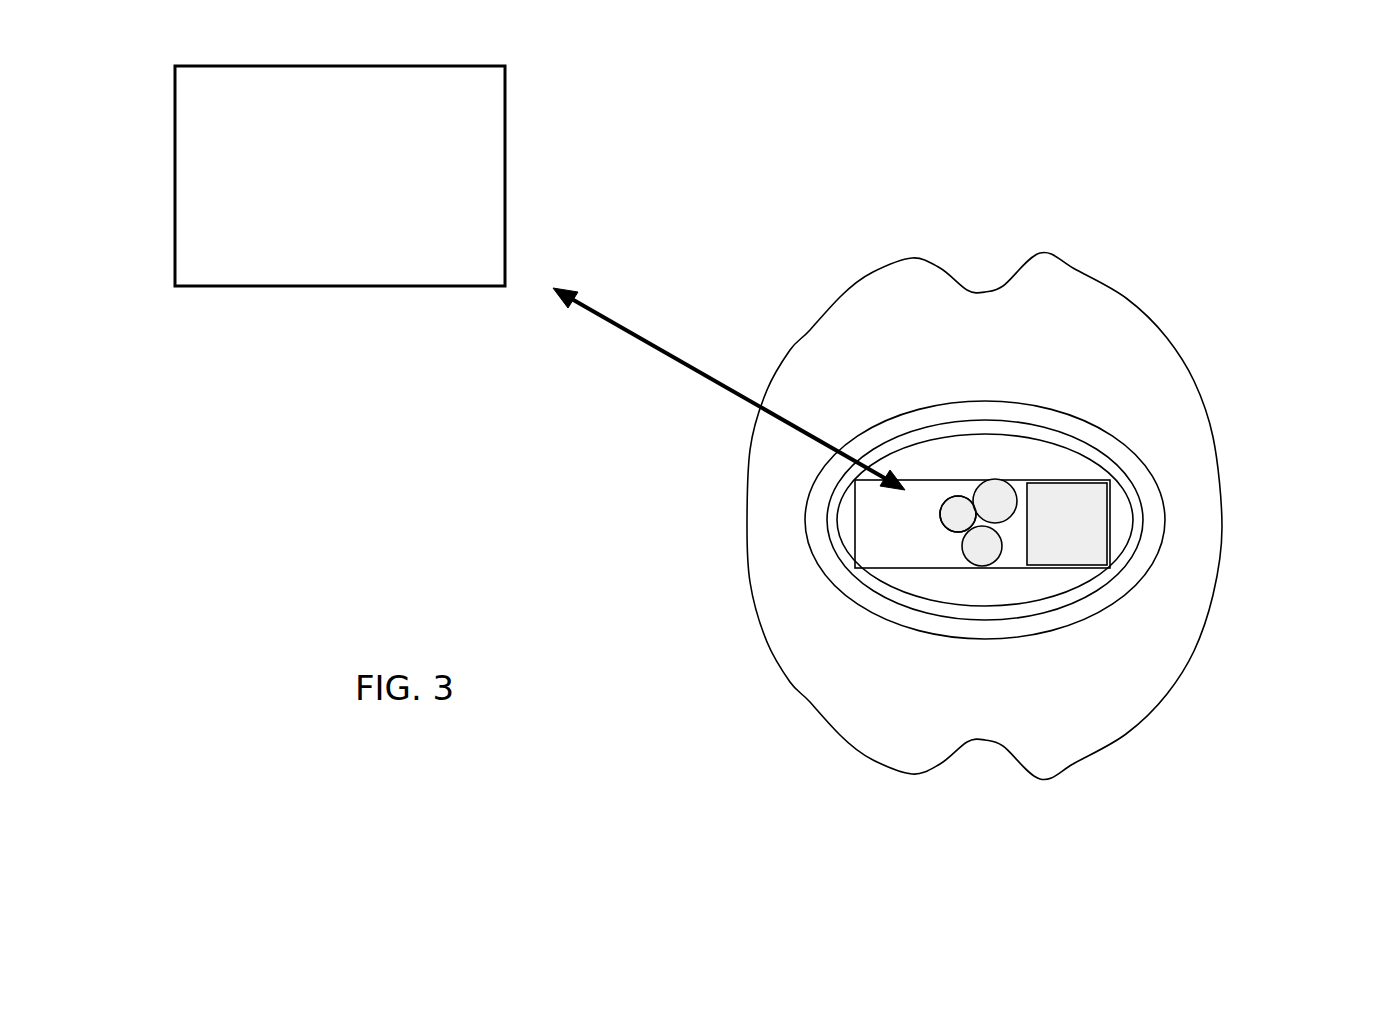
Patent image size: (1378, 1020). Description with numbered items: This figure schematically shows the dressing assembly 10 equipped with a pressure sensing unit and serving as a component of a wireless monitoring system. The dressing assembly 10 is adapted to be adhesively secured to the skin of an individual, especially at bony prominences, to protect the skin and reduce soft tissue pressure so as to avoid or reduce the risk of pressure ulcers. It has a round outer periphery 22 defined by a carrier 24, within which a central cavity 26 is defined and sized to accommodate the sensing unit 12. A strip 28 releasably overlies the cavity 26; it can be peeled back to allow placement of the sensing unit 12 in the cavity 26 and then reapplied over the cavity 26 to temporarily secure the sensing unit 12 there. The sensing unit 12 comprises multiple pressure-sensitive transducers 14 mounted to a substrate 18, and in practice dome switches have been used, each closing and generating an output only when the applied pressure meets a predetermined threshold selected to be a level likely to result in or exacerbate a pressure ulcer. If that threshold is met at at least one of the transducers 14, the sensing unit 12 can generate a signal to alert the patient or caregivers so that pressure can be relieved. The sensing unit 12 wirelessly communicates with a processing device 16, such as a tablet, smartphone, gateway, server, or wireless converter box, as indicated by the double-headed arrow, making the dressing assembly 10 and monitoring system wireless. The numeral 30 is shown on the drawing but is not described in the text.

The dressing assembly 10 is at (1302, 292).
The sensing unit 12 is at (960, 582).
The transducers 14 is at (992, 531).
The processing device 16 is at (340, 176).
The substrate 18 is at (952, 513).
The outer periphery 22 is at (808, 331).
The carrier 24 is at (833, 678).
The central cavity 26 is at (1013, 540).
The strip 28 is at (1098, 505).
The inner ring 30 is at (819, 535).